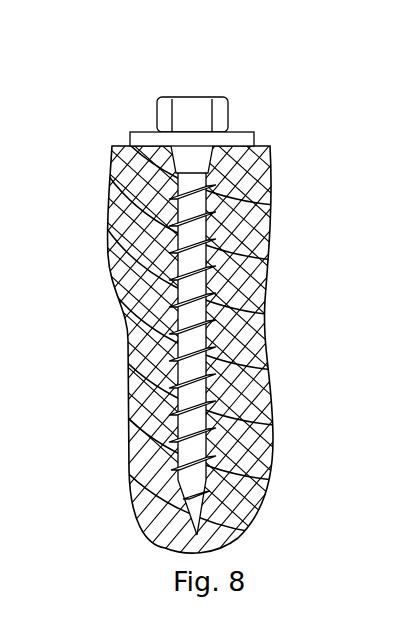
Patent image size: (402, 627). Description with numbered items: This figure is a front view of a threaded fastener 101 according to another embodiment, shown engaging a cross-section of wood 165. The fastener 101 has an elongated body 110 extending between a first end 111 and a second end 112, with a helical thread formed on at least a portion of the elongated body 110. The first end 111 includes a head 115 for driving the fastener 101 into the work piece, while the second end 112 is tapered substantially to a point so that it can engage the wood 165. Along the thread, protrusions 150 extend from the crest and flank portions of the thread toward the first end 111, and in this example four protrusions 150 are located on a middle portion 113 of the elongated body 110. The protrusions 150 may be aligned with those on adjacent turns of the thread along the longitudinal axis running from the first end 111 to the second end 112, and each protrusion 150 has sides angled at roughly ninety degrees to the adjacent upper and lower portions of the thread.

The fastener 101 is at (205, 80).
The head 115 is at (205, 118).
The first end 111 is at (243, 178).
The elongated body 110 is at (246, 307).
The protrusion 150 is at (268, 292).
The middle portion 113 is at (233, 361).
The second end 112 is at (232, 489).
The wood 165 is at (125, 262).